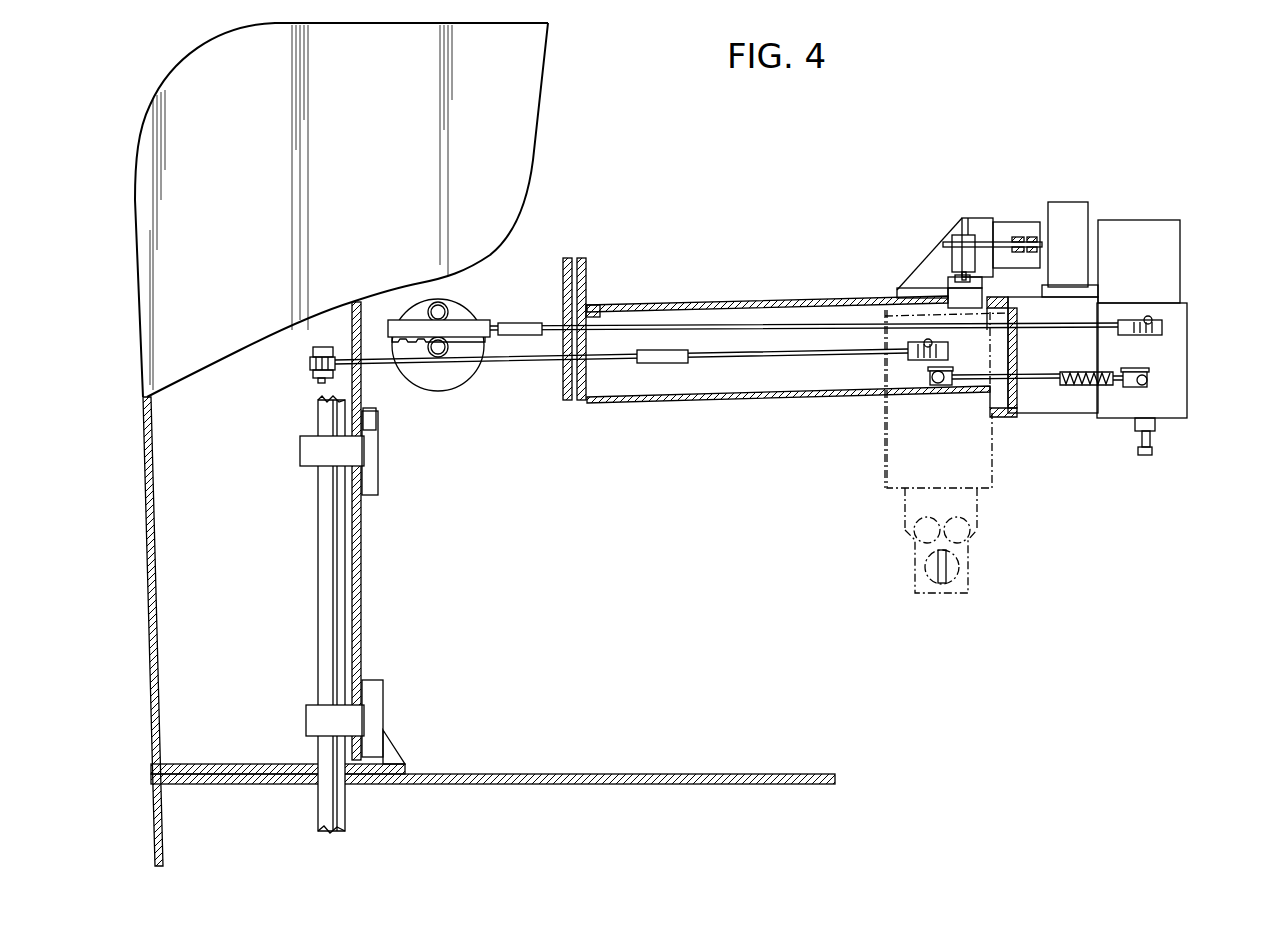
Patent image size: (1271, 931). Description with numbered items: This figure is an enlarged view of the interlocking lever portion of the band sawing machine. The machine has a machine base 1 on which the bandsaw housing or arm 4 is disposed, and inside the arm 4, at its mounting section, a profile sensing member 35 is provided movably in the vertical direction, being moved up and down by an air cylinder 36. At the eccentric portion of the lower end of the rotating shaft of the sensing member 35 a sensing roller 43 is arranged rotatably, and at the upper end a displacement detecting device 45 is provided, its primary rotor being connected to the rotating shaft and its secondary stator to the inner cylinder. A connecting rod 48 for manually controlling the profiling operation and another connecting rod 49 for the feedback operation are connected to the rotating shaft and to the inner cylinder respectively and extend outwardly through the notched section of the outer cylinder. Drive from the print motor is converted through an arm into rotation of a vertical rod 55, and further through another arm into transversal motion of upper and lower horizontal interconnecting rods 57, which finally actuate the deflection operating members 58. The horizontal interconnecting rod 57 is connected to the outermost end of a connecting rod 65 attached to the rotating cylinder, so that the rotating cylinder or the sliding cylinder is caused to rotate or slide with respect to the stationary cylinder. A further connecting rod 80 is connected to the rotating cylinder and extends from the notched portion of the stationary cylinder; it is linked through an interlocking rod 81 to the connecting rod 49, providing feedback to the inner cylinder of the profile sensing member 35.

The machine base 1 is at (152, 797).
The bandsaw housing or arm 4 is at (525, 130).
The profile sensing member 35 is at (1188, 385).
The air cylinder 36 is at (1070, 207).
The sensing roller 43 is at (1143, 455).
The displacement detecting device 45 is at (1170, 252).
The connecting rod 48 is at (1187, 330).
The connecting rod 49 is at (1148, 380).
The vertical rod 55 is at (323, 590).
The horizontal interconnecting rod 57 is at (513, 365).
The deflection operating member 58 is at (897, 468).
The connecting rod 65 is at (930, 343).
The connecting rod 80 is at (930, 380).
The interlocking rod 81 is at (1037, 385).